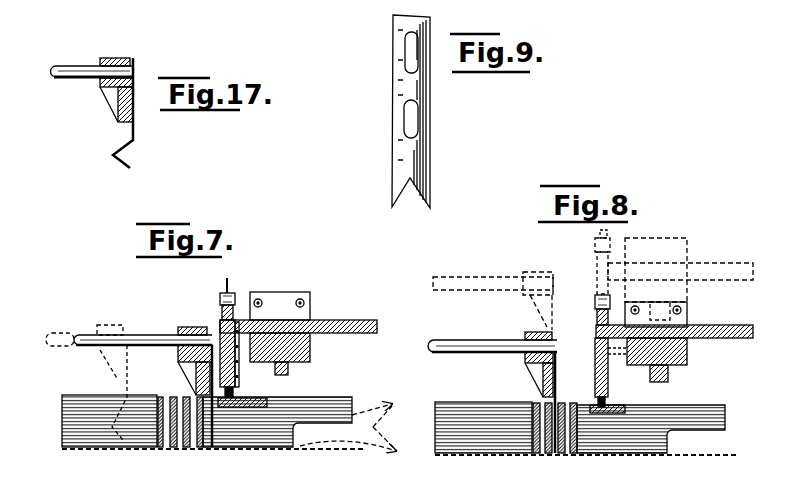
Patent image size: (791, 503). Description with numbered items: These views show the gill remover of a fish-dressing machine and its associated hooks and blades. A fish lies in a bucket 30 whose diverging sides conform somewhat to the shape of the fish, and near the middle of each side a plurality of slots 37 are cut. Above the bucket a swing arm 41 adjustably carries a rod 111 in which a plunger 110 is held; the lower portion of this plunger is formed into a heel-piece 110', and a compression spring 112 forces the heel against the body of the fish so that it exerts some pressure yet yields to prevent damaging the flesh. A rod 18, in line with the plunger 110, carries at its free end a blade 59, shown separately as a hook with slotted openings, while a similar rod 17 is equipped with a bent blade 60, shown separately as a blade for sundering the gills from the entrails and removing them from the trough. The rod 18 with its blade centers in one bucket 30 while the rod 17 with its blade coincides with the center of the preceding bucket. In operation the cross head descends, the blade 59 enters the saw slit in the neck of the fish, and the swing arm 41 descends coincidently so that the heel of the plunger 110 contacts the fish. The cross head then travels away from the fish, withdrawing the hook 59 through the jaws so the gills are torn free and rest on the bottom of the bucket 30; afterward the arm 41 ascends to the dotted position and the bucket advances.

In FIG. 17, the rod 17 is at (62, 64).
In FIG. 7, the rod 17 is at (52, 335).
In FIG. 7, the rod 18 is at (150, 337).
In FIG. 8, the rod 18 is at (463, 333).
In FIG. 7, the bucket 30 is at (83, 438).
In FIG. 8, the bucket 30 is at (510, 443).
In FIG. 7, the slots 37 is at (195, 396).
In FIG. 8, the slots 37 is at (570, 403).
In FIG. 7, the swing arm 41 is at (280, 325).
In FIG. 8, the swing arm 41 is at (687, 356).
In FIG. 9, the blade 59 is at (447, 113).
In FIG. 7, the blade 59 is at (203, 333).
In FIG. 8, the blade 59 is at (556, 358).
In FIG. 17, the bent blade 60 is at (140, 122).
In FIG. 7, the bent blade 60 is at (120, 387).
In FIG. 7, the plunger 110 is at (241, 292).
In FIG. 8, the plunger 110 is at (585, 277).
In FIG. 7, the heel-piece 110' is at (253, 395).
In FIG. 8, the heel-piece 110' is at (624, 375).
In FIG. 7, the rod 111 is at (320, 322).
In FIG. 8, the rod 111 is at (712, 327).
In FIG. 7, the compression spring 112 is at (236, 360).